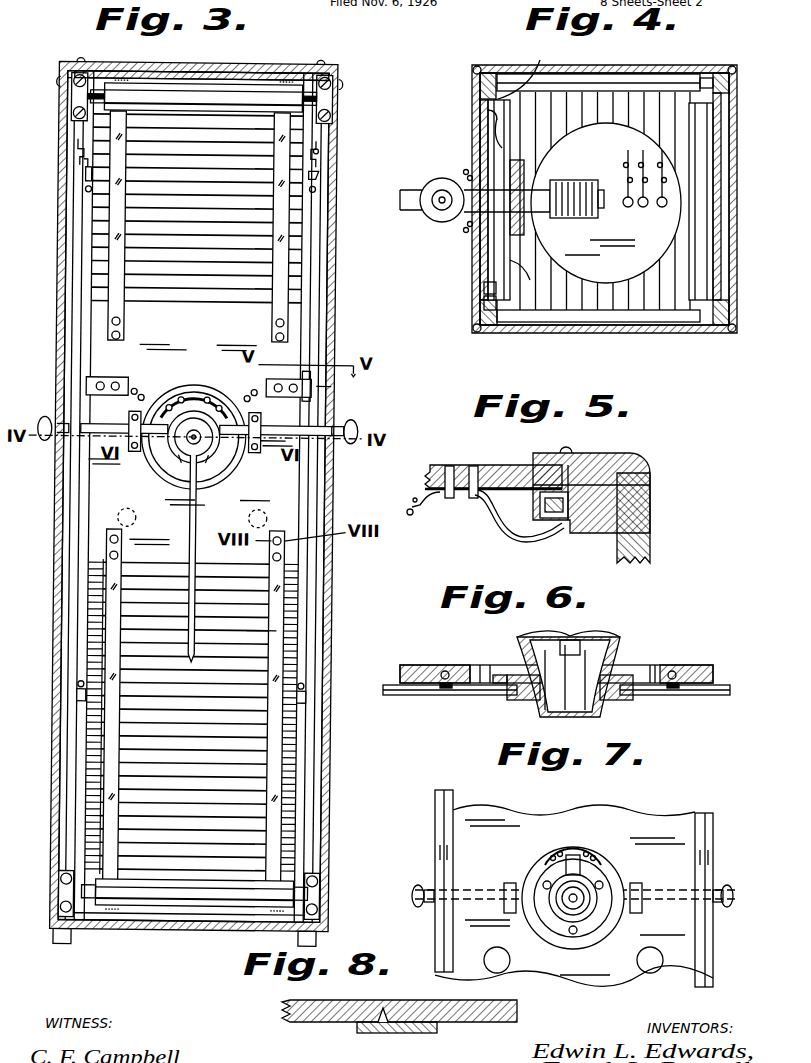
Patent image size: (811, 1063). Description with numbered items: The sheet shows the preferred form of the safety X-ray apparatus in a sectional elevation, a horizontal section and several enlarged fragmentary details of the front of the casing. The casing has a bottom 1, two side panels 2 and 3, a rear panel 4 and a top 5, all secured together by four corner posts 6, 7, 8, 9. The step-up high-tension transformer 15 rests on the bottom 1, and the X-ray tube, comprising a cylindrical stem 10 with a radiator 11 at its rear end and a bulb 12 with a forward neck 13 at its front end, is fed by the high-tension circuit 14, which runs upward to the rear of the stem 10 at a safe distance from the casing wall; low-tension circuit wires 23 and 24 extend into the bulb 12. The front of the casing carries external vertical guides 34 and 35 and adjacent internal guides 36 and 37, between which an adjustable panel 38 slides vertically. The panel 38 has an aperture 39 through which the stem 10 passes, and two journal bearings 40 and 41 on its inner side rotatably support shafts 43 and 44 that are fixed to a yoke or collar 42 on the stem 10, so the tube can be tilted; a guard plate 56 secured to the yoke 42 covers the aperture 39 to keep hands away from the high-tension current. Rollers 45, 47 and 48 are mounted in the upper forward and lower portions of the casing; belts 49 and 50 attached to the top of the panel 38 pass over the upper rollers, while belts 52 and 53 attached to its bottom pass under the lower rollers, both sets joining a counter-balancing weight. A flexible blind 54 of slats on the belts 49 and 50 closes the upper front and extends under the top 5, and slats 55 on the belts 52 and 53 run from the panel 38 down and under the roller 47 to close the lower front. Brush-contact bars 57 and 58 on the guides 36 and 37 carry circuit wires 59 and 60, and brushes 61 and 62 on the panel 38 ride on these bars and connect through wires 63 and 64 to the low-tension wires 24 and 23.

In FIG. 3, the bottom 1 is at (172, 932).
In FIG. 4, the bottom 1 is at (622, 78).
In FIG. 3, the side panel 2 is at (326, 601).
In FIG. 4, the side panel 2 is at (640, 80).
In FIG. 5, the side panel 2 is at (652, 549).
In FIG. 7, the side panel 2 is at (435, 824).
In FIG. 3, the side panel 3 is at (60, 650).
In FIG. 4, the side panel 3 is at (610, 332).
In FIG. 7, the side panel 3 is at (715, 840).
In FIG. 4, the rear or back panel 4 is at (720, 205).
In FIG. 3, the top 5 is at (198, 66).
In FIG. 3, the corner post 6 is at (322, 161).
In FIG. 4, the corner post 6 is at (490, 78).
In FIG. 5, the corner post 6 is at (652, 527).
In FIG. 3, the corner post 7 is at (72, 175).
In FIG. 4, the corner post 7 is at (486, 332).
In FIG. 4, the corner post 8 is at (732, 92).
In FIG. 4, the corner post 9 is at (735, 310).
In FIG. 4, the cylindrical stem 10 is at (540, 190).
In FIG. 6, the cylindrical stem 10 is at (600, 712).
In FIG. 3, the radiator 11 is at (180, 452).
In FIG. 4, the radiator 11 is at (580, 186).
In FIG. 4, the bulb or head portion 12 is at (440, 182).
In FIG. 6, the bulb or head portion 12 is at (614, 642).
In FIG. 7, the bulb or head portion 12 is at (592, 920).
In FIG. 4, the forward neck 13 is at (425, 222).
In FIG. 7, the forward neck 13 is at (565, 910).
In FIG. 3, the high-tension electrical circuit or conductor 14 is at (190, 525).
In FIG. 4, the step-up high-tension transformer 15 is at (620, 265).
In FIG. 3, the low-tension circuit wire 23 is at (208, 415).
In FIG. 4, the low-tension circuit wire 23 is at (466, 178).
In FIG. 7, the low-tension circuit wire 23 is at (545, 866).
In FIG. 3, the low-tension circuit wire 24 is at (178, 415).
In FIG. 4, the low-tension circuit wire 24 is at (495, 240).
In FIG. 7, the low-tension circuit wire 24 is at (602, 866).
In FIG. 4, the external vertical guide 34 is at (482, 100).
In FIG. 5, the external vertical guide 34 is at (555, 455).
In FIG. 7, the external vertical guide 34 is at (445, 846).
In FIG. 4, the external vertical guide 35 is at (482, 305).
In FIG. 7, the external vertical guide 35 is at (700, 856).
In FIG. 3, the internal guide 36 is at (84, 725).
In FIG. 4, the internal guide 36 is at (482, 288).
In FIG. 3, the internal guide 37 is at (306, 758).
In FIG. 4, the internal guide 37 is at (484, 110).
In FIG. 5, the internal guide 37 is at (520, 466).
In FIG. 3, the adjustable panel 38 is at (100, 492).
In FIG. 4, the adjustable panel 38 is at (490, 133).
In FIG. 5, the adjustable panel 38 is at (480, 466).
In FIG. 6, the adjustable panel 38 is at (437, 667).
In FIG. 7, the adjustable panel 38 is at (481, 815).
In FIG. 3, the aperture 39 is at (226, 468).
In FIG. 4, the aperture 39 is at (484, 151).
In FIG. 6, the aperture 39 is at (475, 667).
In FIG. 7, the aperture 39 is at (522, 870).
In FIG. 3, the journal bearing 40 is at (128, 415).
In FIG. 6, the journal bearing 40 is at (452, 697).
In FIG. 3, the journal bearing 41 is at (260, 416).
In FIG. 6, the journal bearing 41 is at (675, 697).
In FIG. 3, the yoke or collar 42 is at (212, 450).
In FIG. 4, the yoke or collar 42 is at (524, 205).
In FIG. 6, the yoke or collar 42 is at (522, 700).
In FIG. 3, the shaft 43 is at (88, 425).
In FIG. 6, the shaft 43 is at (420, 696).
In FIG. 7, the shaft 43 is at (728, 906).
In FIG. 3, the shaft 44 is at (346, 420).
In FIG. 6, the shaft 44 is at (695, 697).
In FIG. 7, the shaft 44 is at (420, 885).
In FIG. 3, the roller 45 is at (228, 98).
In FIG. 3, the roller 47 is at (203, 900).
In FIG. 4, the roller 47 is at (536, 80).
In FIG. 4, the roller 48 is at (705, 220).
In FIG. 3, the belt 49 is at (112, 266).
In FIG. 3, the belt 50 is at (282, 282).
In FIG. 3, the belt 52 is at (112, 573).
In FIG. 4, the belt 52 is at (710, 283).
In FIG. 3, the belt 53 is at (284, 574).
In FIG. 4, the belt 53 is at (710, 125).
In FIG. 8, the belt 53 is at (420, 1034).
In FIG. 3, the flexible panel or blind 54 is at (148, 76).
In FIG. 3, the slats 55 is at (92, 753).
In FIG. 4, the slats 55 is at (570, 322).
In FIG. 8, the slats 55 is at (330, 1022).
In FIG. 3, the guard plate 56 is at (188, 466).
In FIG. 4, the guard plate 56 is at (575, 160).
In FIG. 6, the guard plate 56 is at (630, 678).
In FIG. 7, the guard plate 56 is at (590, 935).
In FIG. 3, the brush-contact bar or rod 57 is at (66, 333).
In FIG. 3, the brush-contact bar or rod 58 is at (312, 330).
In FIG. 5, the brush-contact bar or rod 58 is at (515, 538).
In FIG. 3, the circuit wire 59 is at (74, 142).
In FIG. 3, the circuit wire 60 is at (315, 176).
In FIG. 3, the electrical brush 61 is at (97, 382).
In FIG. 4, the electrical brush 61 is at (520, 325).
In FIG. 3, the electrical brush 62 is at (312, 387).
In FIG. 4, the electrical brush 62 is at (482, 122).
In FIG. 5, the electrical brush 62 is at (550, 520).
In FIG. 3, the circuit wire 63 is at (139, 391).
In FIG. 4, the circuit wire 63 is at (538, 290).
In FIG. 3, the circuit wire 64 is at (256, 391).
In FIG. 4, the circuit wire 64 is at (534, 70).
In FIG. 5, the circuit wire 64 is at (410, 516).